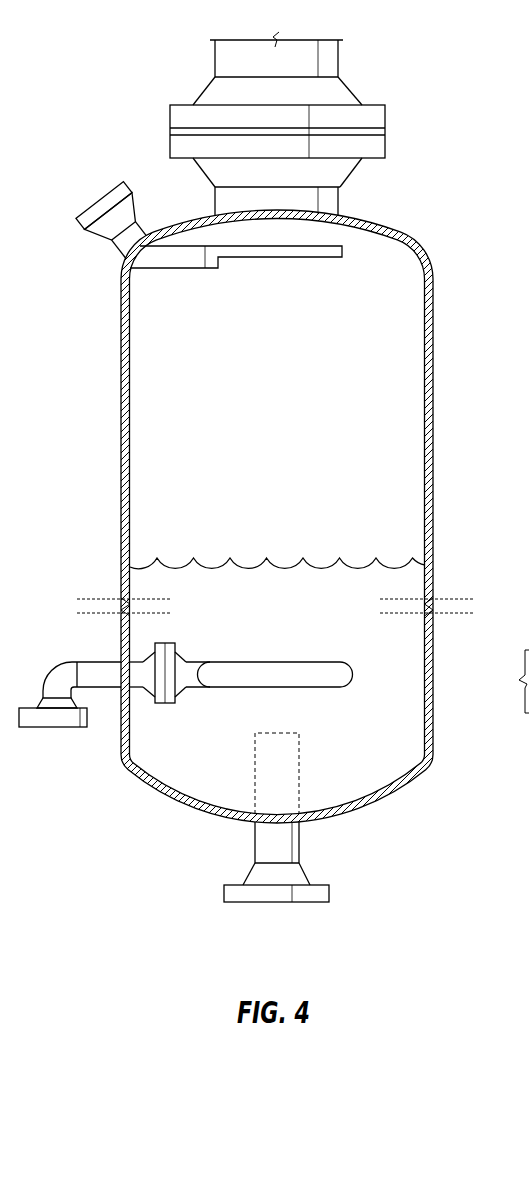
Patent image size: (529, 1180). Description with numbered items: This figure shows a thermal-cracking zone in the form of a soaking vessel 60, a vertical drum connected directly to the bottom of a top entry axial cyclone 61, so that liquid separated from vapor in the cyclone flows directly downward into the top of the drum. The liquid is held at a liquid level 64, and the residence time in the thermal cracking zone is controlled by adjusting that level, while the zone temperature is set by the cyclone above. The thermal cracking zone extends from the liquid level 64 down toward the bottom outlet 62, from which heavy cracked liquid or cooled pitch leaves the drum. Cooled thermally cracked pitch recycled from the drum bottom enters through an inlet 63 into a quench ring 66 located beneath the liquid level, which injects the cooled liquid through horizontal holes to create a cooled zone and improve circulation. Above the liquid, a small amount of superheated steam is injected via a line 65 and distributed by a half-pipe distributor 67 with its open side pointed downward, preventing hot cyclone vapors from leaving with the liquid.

The soaking vessel 60 is at (433, 420).
The top entry axial cyclone 61 is at (347, 87).
The bottom outlet 62 is at (300, 850).
The inlet 63 is at (107, 660).
The liquid level 64 is at (352, 565).
The line 65 is at (122, 247).
The quench ring 66 is at (315, 662).
The half-pipe distributor 67 is at (302, 258).